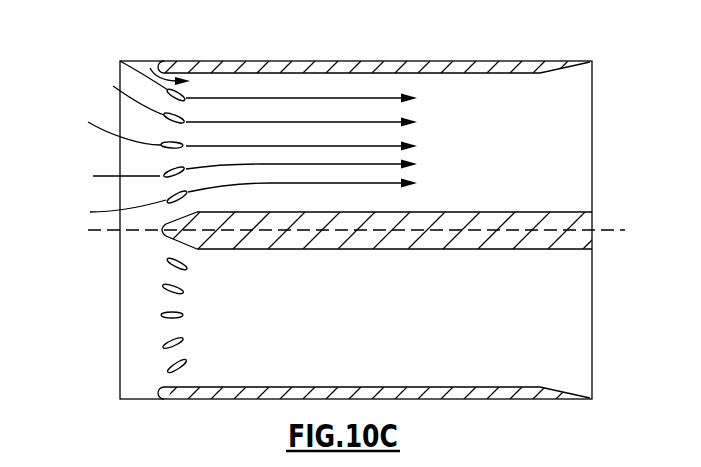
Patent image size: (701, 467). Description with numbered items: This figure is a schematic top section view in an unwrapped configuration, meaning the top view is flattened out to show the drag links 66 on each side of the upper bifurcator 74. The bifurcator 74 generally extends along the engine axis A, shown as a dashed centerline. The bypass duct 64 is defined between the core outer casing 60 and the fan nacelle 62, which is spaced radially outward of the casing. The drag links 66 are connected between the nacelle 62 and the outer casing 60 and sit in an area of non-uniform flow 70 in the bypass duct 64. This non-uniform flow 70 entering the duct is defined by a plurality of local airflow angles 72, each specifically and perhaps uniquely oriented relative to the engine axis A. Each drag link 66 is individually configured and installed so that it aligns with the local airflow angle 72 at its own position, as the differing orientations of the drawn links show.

The core outer casing 60 is at (592, 310).
The fan nacelle 62 is at (518, 68).
The bypass duct 64 is at (560, 134).
The drag links 66 is at (165, 172).
The area of non-uniform flow 70 is at (150, 68).
The local airflow angles 72 is at (167, 91).
The upper bifurcator 74 is at (548, 220).
The engine axis A is at (612, 229).